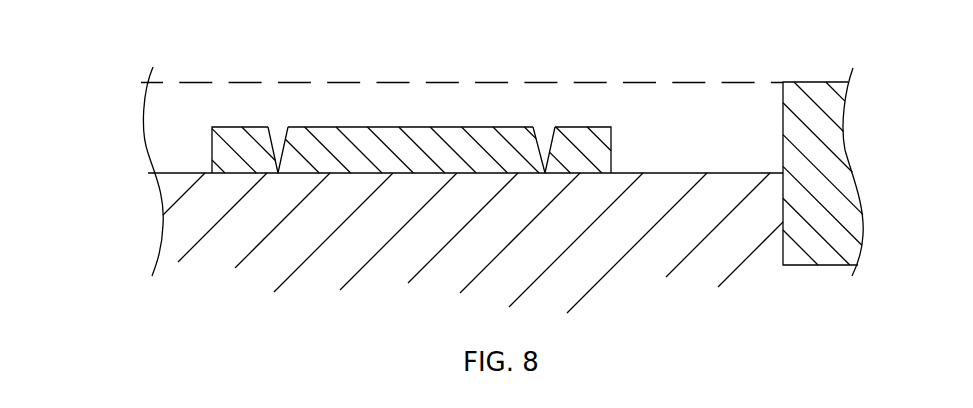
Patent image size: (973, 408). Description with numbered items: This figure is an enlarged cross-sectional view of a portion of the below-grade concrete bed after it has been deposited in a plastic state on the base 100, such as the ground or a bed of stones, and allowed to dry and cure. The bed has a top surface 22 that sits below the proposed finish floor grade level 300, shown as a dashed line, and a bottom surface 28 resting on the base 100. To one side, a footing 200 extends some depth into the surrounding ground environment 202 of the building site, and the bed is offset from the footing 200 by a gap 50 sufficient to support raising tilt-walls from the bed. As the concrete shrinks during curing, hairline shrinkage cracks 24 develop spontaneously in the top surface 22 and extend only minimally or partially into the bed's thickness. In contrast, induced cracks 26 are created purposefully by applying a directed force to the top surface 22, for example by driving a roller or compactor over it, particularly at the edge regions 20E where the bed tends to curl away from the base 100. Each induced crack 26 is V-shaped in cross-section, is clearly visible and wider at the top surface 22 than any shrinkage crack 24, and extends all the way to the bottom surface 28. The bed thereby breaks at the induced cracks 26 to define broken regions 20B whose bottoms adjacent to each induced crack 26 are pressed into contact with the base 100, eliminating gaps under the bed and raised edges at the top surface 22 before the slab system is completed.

The edge portion of bonding pattern 20E is at (208, 153).
The induced cracks 26 is at (278, 170).
The shrinkage cracks 24 is at (340, 140).
The top surface 22 is at (407, 128).
The finish floor grade level 300 is at (582, 82).
The base 100 is at (174, 175).
The gap 50 is at (746, 142).
The footing 200 is at (849, 187).
The broken regions 20B is at (238, 163).
The bottom surface 28 is at (430, 175).
The ground environment 202 is at (703, 267).